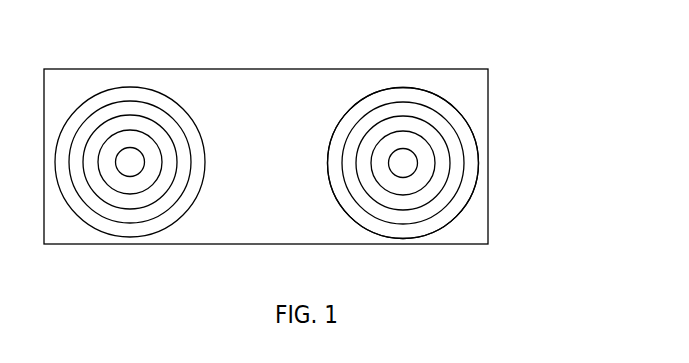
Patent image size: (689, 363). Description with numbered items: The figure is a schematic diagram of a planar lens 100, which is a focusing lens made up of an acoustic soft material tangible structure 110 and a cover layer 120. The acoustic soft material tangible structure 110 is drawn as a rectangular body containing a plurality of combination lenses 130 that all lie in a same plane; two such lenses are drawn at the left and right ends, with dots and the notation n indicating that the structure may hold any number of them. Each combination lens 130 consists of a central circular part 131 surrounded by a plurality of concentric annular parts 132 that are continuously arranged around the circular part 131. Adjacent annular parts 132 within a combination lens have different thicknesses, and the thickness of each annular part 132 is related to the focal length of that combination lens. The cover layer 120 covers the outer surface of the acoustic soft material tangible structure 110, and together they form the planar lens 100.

The planar lens 100 is at (268, 244).
The acoustic soft material tangible structure 110 is at (268, 155).
The cover layer 120 is at (428, 86).
The combination lens 130 is at (183, 162).
The circular part 131 is at (403, 163).
The annular parts 132 is at (420, 170).